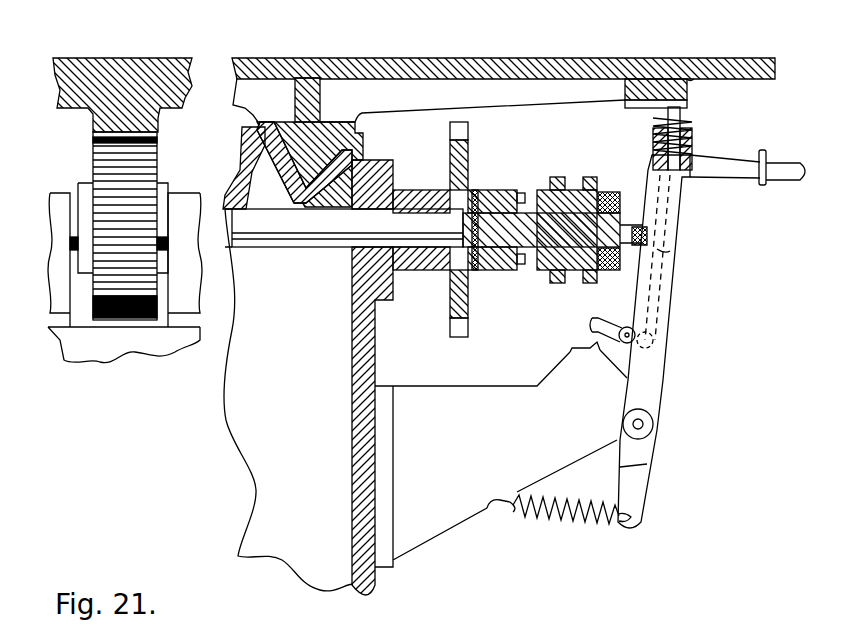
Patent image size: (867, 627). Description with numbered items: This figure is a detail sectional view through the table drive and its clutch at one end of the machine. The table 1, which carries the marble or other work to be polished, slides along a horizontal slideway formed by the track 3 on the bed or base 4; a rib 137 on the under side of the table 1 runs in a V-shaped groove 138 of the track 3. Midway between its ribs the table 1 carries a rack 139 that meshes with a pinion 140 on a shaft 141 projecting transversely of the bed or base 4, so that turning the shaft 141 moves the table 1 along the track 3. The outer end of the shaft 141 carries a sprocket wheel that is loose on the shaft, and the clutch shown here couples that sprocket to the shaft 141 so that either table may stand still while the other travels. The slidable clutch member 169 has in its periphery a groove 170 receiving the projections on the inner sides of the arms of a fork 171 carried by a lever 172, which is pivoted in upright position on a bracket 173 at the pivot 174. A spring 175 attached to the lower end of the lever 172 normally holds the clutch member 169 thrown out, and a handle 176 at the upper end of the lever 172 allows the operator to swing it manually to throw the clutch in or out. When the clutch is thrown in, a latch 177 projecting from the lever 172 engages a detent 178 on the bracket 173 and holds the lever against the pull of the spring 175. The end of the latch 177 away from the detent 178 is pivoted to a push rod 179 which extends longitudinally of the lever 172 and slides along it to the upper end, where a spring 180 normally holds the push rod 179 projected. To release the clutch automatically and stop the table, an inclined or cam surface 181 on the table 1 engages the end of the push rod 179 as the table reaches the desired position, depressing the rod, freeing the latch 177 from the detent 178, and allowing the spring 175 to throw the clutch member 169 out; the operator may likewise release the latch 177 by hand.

The table 1 is at (443, 62).
The track 3 is at (241, 146).
The bed or base 4 is at (308, 377).
The rib 137 is at (330, 122).
The V-shaped groove 138 is at (322, 165).
The rack 139 is at (153, 121).
The pinion 140 is at (117, 320).
The shaft 141 is at (275, 235).
The slidable clutch member 169 is at (554, 176).
The groove 170 is at (573, 180).
The fork 171 is at (645, 246).
The lever 172 is at (665, 356).
The bracket 173 is at (501, 458).
The pivot 174 is at (646, 428).
The spring 175 is at (556, 527).
The handle 176 is at (741, 163).
The latch 177 is at (606, 328).
The detent 178 is at (588, 345).
The push rod 179 is at (660, 162).
The spring 180 is at (686, 130).
The inclined or cam surface 181 is at (643, 97).